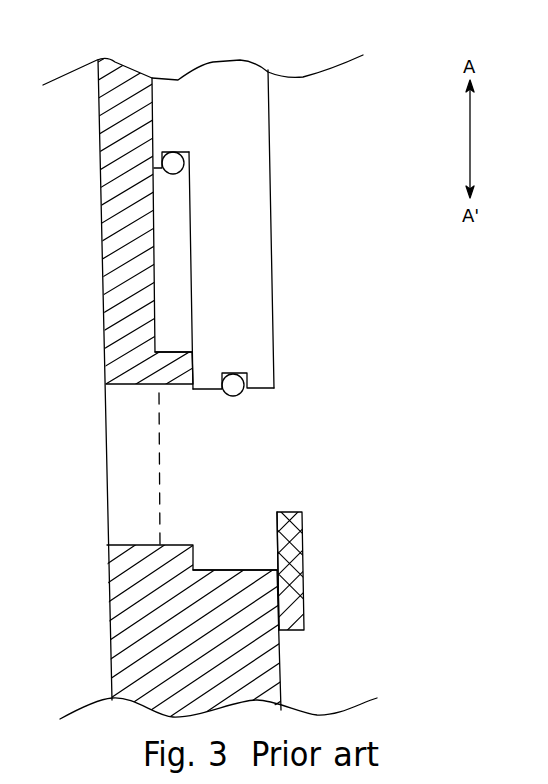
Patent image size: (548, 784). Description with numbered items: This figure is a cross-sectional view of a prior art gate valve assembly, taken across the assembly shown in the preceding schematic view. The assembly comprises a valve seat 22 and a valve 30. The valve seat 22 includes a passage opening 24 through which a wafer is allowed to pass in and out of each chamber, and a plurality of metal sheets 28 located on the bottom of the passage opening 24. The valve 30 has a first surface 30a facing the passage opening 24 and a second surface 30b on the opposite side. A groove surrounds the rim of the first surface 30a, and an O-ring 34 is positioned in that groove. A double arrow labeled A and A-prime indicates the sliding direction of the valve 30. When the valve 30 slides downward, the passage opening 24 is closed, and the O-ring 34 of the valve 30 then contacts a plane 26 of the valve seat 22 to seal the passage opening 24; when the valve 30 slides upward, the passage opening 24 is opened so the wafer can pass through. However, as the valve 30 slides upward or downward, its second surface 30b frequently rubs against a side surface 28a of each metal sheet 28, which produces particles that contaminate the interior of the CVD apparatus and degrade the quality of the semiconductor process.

The valve seat 22 is at (115, 128).
The passage opening 24 is at (125, 471).
The plane 26 is at (177, 345).
The metal sheet 28 is at (274, 392).
The side surface 28a is at (277, 540).
The valve 30 is at (196, 229).
The first surface 30a is at (190, 247).
The second surface 30b is at (270, 182).
The O-ring 34 is at (173, 152).